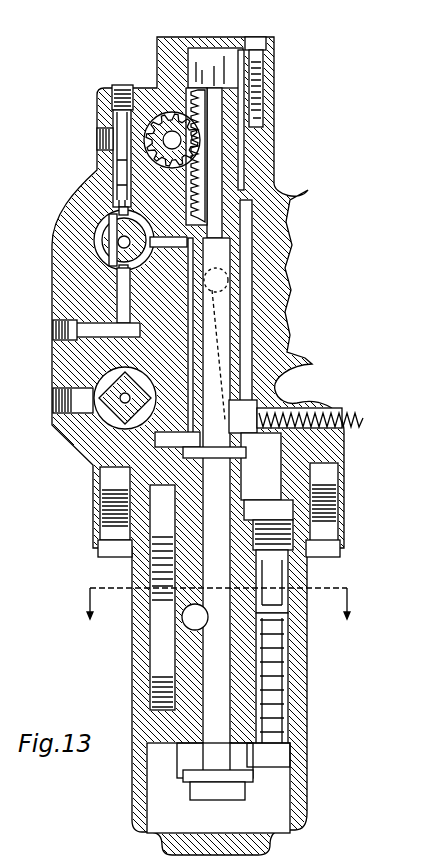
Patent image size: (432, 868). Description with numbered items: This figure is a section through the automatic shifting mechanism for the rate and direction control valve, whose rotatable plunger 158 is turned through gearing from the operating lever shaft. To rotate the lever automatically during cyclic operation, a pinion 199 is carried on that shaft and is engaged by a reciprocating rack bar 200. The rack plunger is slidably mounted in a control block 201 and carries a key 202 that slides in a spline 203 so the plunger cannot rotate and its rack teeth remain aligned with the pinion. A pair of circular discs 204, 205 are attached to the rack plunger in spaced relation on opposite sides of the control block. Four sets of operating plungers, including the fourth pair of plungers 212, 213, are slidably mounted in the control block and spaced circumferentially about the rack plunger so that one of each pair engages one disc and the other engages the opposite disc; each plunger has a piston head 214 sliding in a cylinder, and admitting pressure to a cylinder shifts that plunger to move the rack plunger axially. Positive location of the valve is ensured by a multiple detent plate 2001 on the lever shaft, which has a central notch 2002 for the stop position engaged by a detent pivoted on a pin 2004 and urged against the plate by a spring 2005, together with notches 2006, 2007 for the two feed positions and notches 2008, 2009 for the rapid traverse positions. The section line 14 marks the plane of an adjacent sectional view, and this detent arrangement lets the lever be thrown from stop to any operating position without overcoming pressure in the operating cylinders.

The section line 14- 14 is at (215, 617).
The rotatable plunger 158 is at (110, 250).
The pinion 199 is at (147, 95).
The rack bar 200 is at (150, 93).
The control block 201 is at (138, 575).
The key 202 is at (177, 643).
The spline 203 is at (135, 678).
The circular disc 204 is at (157, 462).
The circular disc 205 is at (281, 750).
The operating plunger 212 is at (278, 675).
The operating plunger 213 is at (160, 583).
The piston head 214 is at (276, 610).
The multiple detent plate 2001 is at (100, 173).
The central notch 2002 is at (269, 122).
The pin 2004 is at (228, 300).
The spring 2005 is at (341, 412).
The notch 2006 is at (212, 110).
The notch 2007 is at (244, 167).
The notch 2008 is at (183, 37).
The notch 2009 is at (187, 185).